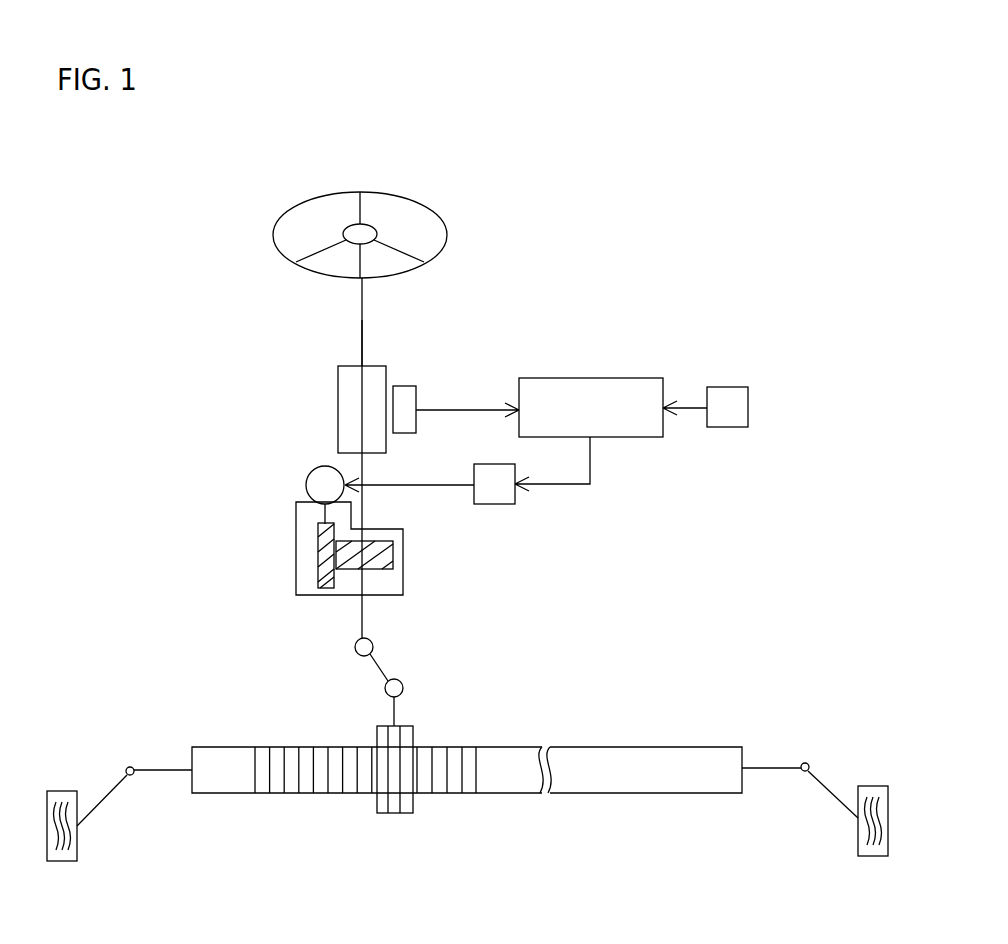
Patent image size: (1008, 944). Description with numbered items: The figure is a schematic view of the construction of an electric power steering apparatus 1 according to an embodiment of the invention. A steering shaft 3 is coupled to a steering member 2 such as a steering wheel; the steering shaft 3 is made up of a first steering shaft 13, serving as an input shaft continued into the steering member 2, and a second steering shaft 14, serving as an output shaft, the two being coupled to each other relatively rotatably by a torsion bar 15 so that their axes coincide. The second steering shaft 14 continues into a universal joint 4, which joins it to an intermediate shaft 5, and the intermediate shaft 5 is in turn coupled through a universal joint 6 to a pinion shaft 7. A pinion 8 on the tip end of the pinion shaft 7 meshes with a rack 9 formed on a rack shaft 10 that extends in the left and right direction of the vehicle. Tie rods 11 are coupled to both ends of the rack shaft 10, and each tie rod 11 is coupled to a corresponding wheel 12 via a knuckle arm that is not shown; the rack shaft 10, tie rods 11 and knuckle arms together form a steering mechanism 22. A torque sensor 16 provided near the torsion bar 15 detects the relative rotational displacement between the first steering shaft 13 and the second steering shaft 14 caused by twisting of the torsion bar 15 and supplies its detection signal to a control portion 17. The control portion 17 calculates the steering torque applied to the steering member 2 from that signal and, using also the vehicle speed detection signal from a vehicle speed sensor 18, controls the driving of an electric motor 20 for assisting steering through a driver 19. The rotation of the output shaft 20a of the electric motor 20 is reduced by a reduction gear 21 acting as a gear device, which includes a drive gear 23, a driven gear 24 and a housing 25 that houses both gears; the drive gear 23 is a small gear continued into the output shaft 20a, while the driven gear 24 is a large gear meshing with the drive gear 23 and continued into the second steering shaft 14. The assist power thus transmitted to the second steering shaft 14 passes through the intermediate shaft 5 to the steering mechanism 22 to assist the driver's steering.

The electric power steering apparatus 1 is at (533, 155).
The steering member 2 is at (385, 192).
The steering shaft 3 is at (364, 343).
The universal joint 4 is at (355, 647).
The intermediate shaft 5 is at (378, 672).
The universal joint 6 is at (403, 684).
The pinion shaft 7 is at (396, 710).
The pinion 8 is at (396, 813).
The rack 9 is at (279, 785).
The rack shaft 10 is at (508, 793).
The tie rod 11 is at (100, 802).
The wheel 12 is at (62, 861).
The first steering shaft 13 is at (364, 322).
The second steering shaft 14 is at (364, 477).
The torsion bar 15 is at (338, 412).
The torque sensor 16 is at (416, 390).
The control portion 17 is at (620, 378).
The vehicle speed sensor 18 is at (724, 387).
The driver 19 is at (494, 504).
The electric motor 20 is at (306, 485).
The output shaft 20a is at (318, 513).
The reduction gear 21 is at (242, 608).
The steering mechanism 22 is at (808, 740).
The drive gear 23 is at (318, 568).
The driven gear 24 is at (380, 569).
The housing 25 is at (405, 567).